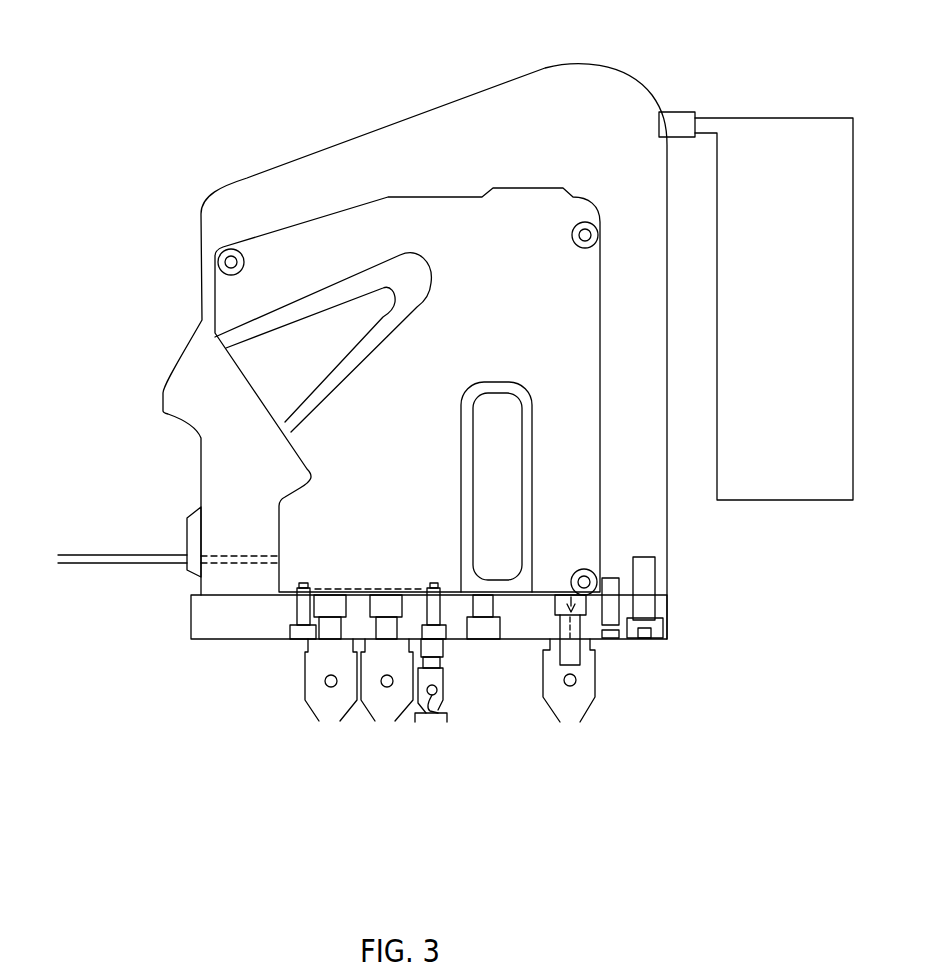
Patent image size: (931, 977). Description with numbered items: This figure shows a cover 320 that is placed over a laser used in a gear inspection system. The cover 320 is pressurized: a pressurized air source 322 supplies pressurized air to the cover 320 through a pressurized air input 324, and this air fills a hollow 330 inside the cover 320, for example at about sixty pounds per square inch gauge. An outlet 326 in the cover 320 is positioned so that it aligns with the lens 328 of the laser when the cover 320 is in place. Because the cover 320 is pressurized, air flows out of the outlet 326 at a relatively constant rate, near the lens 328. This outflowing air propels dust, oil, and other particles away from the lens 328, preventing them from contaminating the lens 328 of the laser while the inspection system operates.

The cover 320 is at (528, 73).
The pressurized air source 322 is at (752, 481).
The pressurized air input 324 is at (677, 117).
The outlet 326 is at (143, 598).
The lens 328 is at (258, 540).
The hollow 330 is at (462, 150).